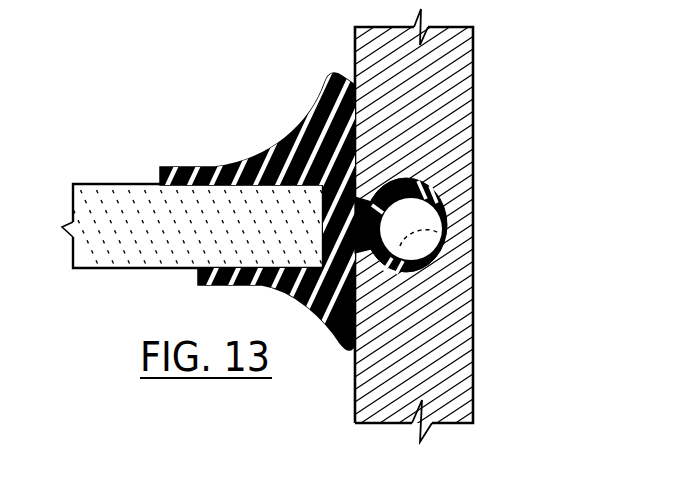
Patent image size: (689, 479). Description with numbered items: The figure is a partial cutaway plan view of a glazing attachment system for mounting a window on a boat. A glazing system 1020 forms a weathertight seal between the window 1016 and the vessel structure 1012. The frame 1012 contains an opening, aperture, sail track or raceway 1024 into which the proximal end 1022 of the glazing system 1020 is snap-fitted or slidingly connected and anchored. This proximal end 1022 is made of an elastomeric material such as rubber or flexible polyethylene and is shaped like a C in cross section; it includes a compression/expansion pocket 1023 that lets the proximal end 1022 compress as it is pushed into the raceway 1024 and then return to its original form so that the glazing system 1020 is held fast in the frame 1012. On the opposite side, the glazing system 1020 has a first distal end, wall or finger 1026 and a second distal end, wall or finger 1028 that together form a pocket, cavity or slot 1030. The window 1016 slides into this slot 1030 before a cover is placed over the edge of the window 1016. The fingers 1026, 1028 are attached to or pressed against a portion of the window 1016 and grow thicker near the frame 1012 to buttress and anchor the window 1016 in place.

The vessel structure 1012 is at (463, 79).
The window 1016 is at (97, 185).
The glazing system 1020 is at (308, 53).
The proximal end 1022 is at (440, 178).
The compression/expansion pocket 1023 is at (442, 246).
The raceway 1024 is at (432, 218).
The first finger 1026 is at (226, 287).
The second finger 1028 is at (213, 166).
The slot 1030 is at (316, 252).